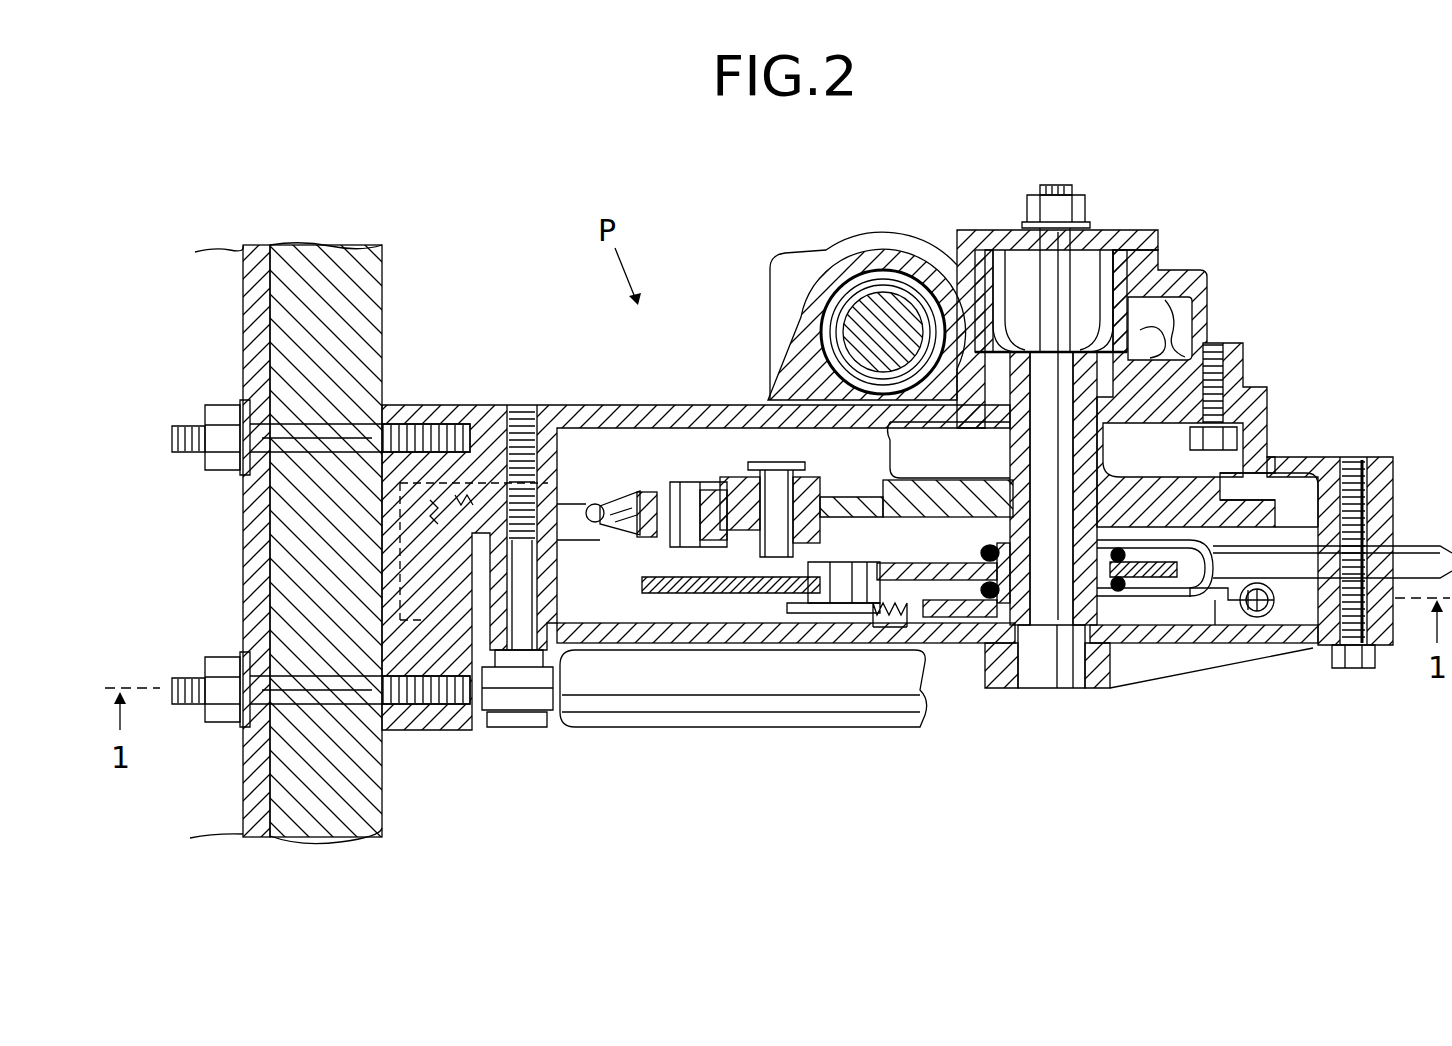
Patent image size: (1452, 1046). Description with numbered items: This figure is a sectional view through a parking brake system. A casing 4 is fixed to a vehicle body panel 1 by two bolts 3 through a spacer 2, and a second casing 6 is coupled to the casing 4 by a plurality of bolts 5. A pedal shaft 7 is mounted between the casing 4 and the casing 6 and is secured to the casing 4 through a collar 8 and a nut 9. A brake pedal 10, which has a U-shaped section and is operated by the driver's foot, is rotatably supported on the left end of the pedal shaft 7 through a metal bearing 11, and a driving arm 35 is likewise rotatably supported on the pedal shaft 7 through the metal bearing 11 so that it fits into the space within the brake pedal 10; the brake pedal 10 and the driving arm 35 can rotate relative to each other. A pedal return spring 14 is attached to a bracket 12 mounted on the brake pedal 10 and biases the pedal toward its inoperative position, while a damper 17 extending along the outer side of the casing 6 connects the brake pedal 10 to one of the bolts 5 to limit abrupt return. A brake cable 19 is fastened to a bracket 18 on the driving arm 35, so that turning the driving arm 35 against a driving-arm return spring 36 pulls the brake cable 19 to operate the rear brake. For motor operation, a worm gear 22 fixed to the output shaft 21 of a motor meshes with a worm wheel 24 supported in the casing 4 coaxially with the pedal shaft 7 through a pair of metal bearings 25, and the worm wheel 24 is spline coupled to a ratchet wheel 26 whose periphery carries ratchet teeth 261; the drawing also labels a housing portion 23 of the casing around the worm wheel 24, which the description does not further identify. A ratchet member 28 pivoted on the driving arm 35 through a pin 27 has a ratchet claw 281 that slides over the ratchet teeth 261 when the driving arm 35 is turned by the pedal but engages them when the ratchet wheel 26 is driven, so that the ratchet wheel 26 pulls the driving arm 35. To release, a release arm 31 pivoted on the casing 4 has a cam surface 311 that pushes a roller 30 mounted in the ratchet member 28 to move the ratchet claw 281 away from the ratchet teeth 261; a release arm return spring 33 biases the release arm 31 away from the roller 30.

The vehicle body panel 1 is at (258, 316).
The spacer 2 is at (380, 300).
The bolt 3 is at (182, 428).
The casing 4 is at (616, 410).
The bolt 5 is at (540, 576).
The casing 6 is at (641, 632).
The pedal shaft 7 is at (1059, 493).
The collar 8 is at (1080, 300).
The nut 9 is at (1075, 215).
The brake pedal 10 is at (1296, 588).
The metal bearing 11 is at (1000, 645).
The bracket 12 is at (1218, 600).
The pedal return spring 14 is at (1259, 618).
The damper 17 is at (768, 708).
The bracket 18 is at (953, 600).
The brake cable 19 is at (690, 597).
The output shaft 21 is at (896, 351).
The worm gear 22 is at (832, 272).
The housing 23 is at (1160, 256).
The worm wheel 24 is at (1207, 300).
The metal bearing 25 is at (1010, 440).
The ratchet wheel 26 is at (1258, 490).
The ratchet teeth 261 is at (1275, 508).
The pin 27 is at (815, 485).
The ratchet member 28 is at (722, 470).
The ratchet claw 281 is at (850, 515).
The roller 30 is at (660, 543).
The release arm 31 is at (624, 495).
The cam surface 311 is at (655, 496).
The release arm return spring 33 is at (592, 504).
The driving arm 35 is at (1157, 582).
The driving-arm return spring 36 is at (888, 627).